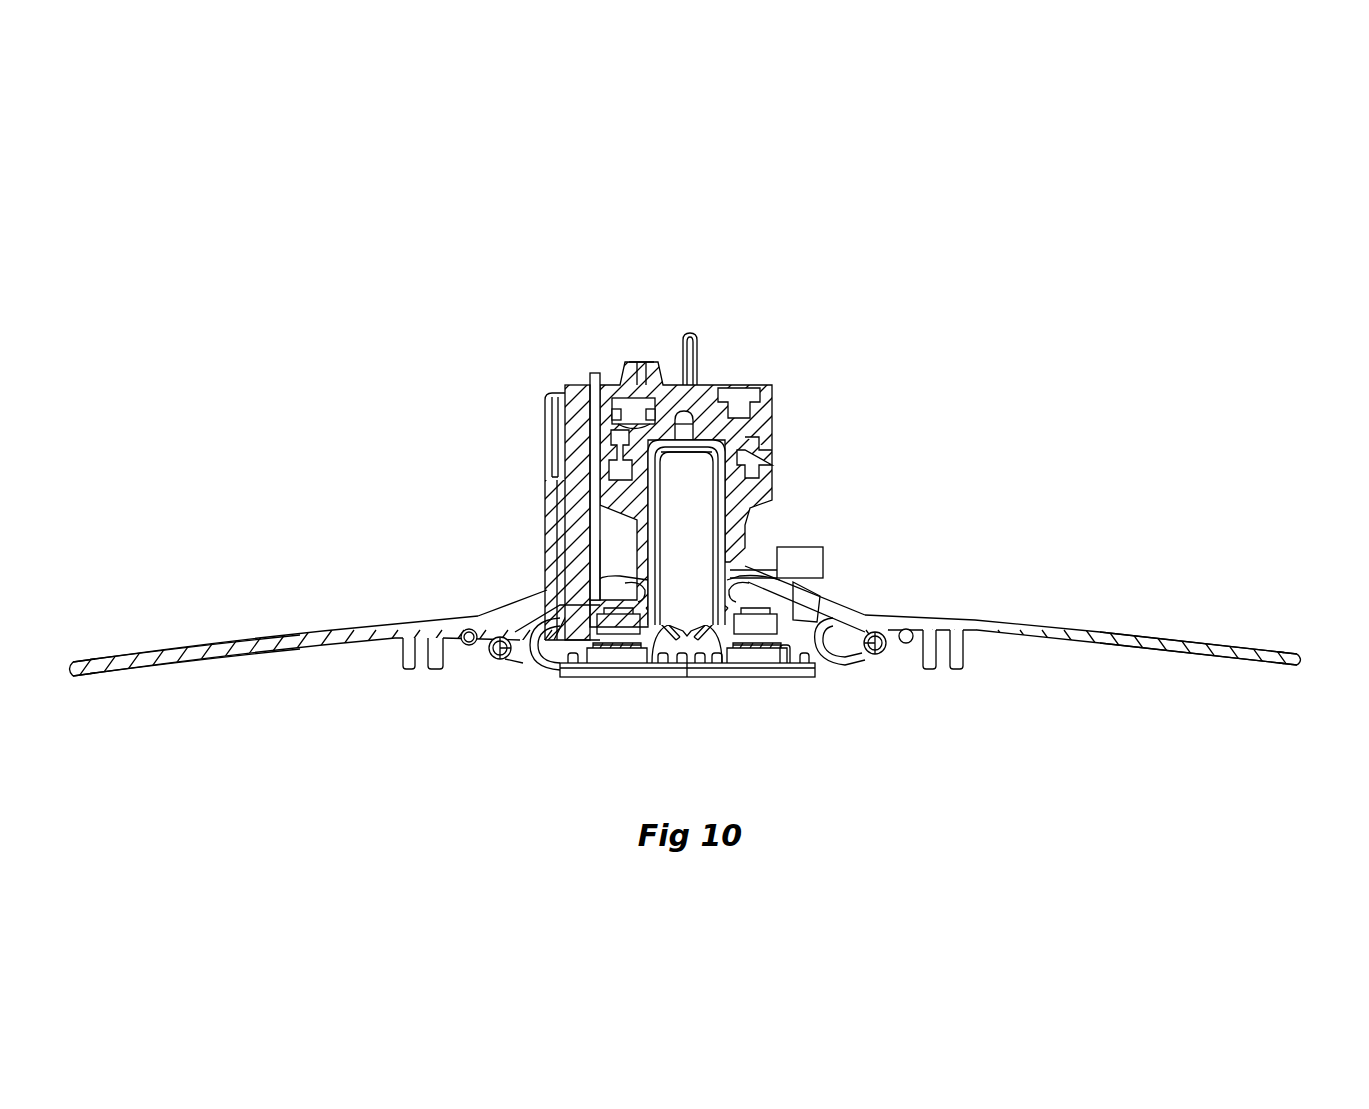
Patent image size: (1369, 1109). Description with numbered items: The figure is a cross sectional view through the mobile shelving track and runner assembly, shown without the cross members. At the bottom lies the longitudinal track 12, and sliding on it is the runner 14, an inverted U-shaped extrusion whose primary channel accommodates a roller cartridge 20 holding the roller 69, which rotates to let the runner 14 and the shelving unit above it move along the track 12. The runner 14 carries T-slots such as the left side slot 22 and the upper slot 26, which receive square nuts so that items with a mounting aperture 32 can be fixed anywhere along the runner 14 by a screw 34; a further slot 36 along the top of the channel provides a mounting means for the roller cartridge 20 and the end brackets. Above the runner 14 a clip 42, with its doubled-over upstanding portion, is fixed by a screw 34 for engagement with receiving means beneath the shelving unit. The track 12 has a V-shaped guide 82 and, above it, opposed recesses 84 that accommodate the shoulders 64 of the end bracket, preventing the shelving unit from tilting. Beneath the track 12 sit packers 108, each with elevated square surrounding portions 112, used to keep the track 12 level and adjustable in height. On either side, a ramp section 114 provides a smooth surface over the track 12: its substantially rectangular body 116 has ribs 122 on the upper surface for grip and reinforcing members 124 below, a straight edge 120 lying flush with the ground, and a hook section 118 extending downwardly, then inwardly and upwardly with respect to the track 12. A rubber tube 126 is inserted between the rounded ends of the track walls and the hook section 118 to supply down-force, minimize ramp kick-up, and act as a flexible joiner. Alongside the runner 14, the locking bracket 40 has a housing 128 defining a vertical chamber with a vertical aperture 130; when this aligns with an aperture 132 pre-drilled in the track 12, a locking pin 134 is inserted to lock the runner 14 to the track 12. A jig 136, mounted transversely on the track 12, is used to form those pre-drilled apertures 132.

The track 12 is at (835, 600).
The runner 14 is at (772, 420).
The roller cartridge 20 is at (727, 495).
The slot 22 is at (757, 457).
The slot 26 is at (735, 397).
The mounting aperture 32 is at (645, 368).
The screw 34 is at (684, 455).
The slot 36 is at (688, 412).
The locking bracket 40 is at (538, 488).
The clip 42 is at (700, 345).
The shoulder 64 is at (637, 590).
The roller 69 is at (697, 530).
The V-shaped guide 82 is at (663, 648).
The recess 84 is at (645, 590).
The packer 108 is at (792, 679).
The elevated square surrounding portion 112 is at (592, 665).
The ramp section 114 is at (122, 655).
The body 116 is at (153, 666).
The hook section 118 is at (508, 674).
The straight edge 120 is at (73, 676).
The rib 122 is at (240, 632).
The reinforcing member 124 is at (402, 668).
The rubber tube 126 is at (490, 657).
The housing 128 is at (546, 397).
The vertical aperture 130 is at (597, 377).
The aperture 132 is at (598, 573).
The locking pin 134 is at (572, 433).
The jig 136 is at (820, 567).